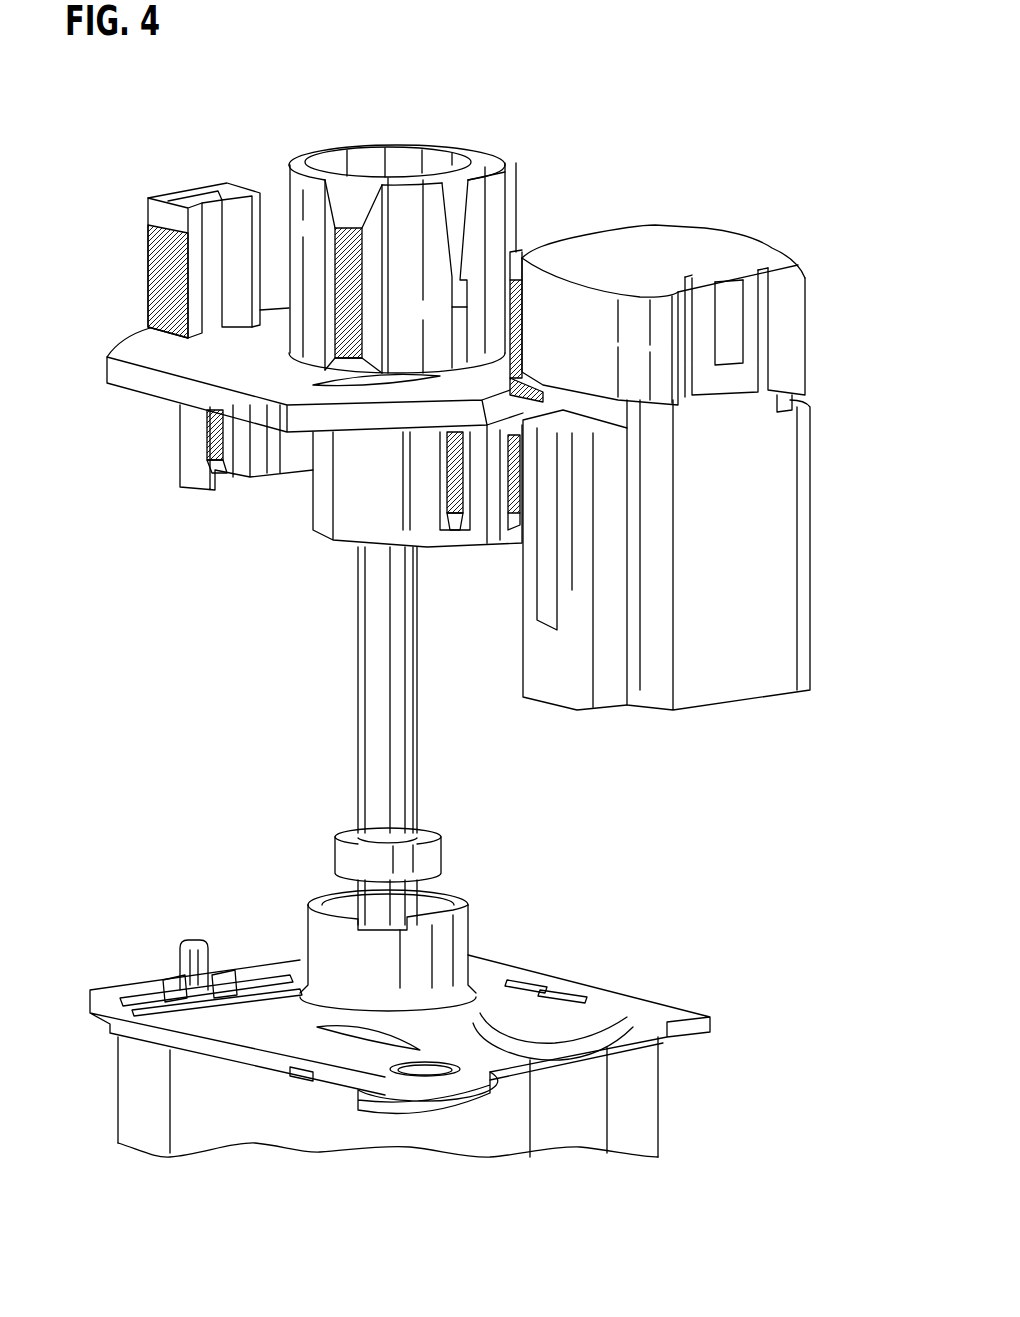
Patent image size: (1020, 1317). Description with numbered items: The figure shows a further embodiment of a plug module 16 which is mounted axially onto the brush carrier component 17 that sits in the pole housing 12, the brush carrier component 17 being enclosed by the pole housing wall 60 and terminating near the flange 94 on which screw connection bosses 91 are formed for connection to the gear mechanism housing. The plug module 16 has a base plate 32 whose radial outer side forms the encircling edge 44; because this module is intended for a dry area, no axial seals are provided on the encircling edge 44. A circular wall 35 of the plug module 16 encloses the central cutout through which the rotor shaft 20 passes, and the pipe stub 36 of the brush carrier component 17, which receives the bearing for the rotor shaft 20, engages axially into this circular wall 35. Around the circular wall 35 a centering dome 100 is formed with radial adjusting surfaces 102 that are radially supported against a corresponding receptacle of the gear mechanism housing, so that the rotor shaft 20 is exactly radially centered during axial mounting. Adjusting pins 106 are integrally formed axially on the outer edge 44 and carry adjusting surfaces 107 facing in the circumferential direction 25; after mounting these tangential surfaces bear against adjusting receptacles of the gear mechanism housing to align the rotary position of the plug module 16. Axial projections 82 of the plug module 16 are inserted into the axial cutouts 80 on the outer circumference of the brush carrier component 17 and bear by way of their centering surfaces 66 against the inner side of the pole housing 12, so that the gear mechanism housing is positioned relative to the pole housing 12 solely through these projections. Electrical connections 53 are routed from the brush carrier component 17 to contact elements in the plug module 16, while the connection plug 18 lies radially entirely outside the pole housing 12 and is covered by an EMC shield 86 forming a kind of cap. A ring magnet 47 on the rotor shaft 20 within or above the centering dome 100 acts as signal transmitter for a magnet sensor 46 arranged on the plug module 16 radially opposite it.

The pole housing 12 is at (572, 1112).
The plug module 16 is at (122, 203).
The brush carrier component 17 is at (576, 936).
The connection plug 18 is at (755, 565).
The rotor shaft 20 is at (380, 731).
The circumferential direction 25 is at (168, 578).
The base plate 32 is at (217, 368).
The circular wall 35 is at (402, 228).
The pipe stub 36 is at (350, 960).
The encircling edge 44 is at (192, 393).
The magnet sensor 46 is at (457, 340).
The ring magnet 47 is at (410, 858).
The electrical connections 53 is at (190, 963).
The pole housing wall 60 is at (500, 1128).
The centering surfaces 66 is at (208, 427).
The axial cutouts 80 is at (200, 1020).
The axial projections 82 is at (238, 455).
The EMC shield 86 is at (695, 250).
The screw connection bosses 91 is at (420, 1090).
The flange 94 is at (236, 1055).
The centering dome 100 is at (410, 155).
The radial adjusting surfaces 102 is at (518, 224).
The adjusting pins 106 is at (220, 205).
The adjusting surfaces 107 is at (166, 286).